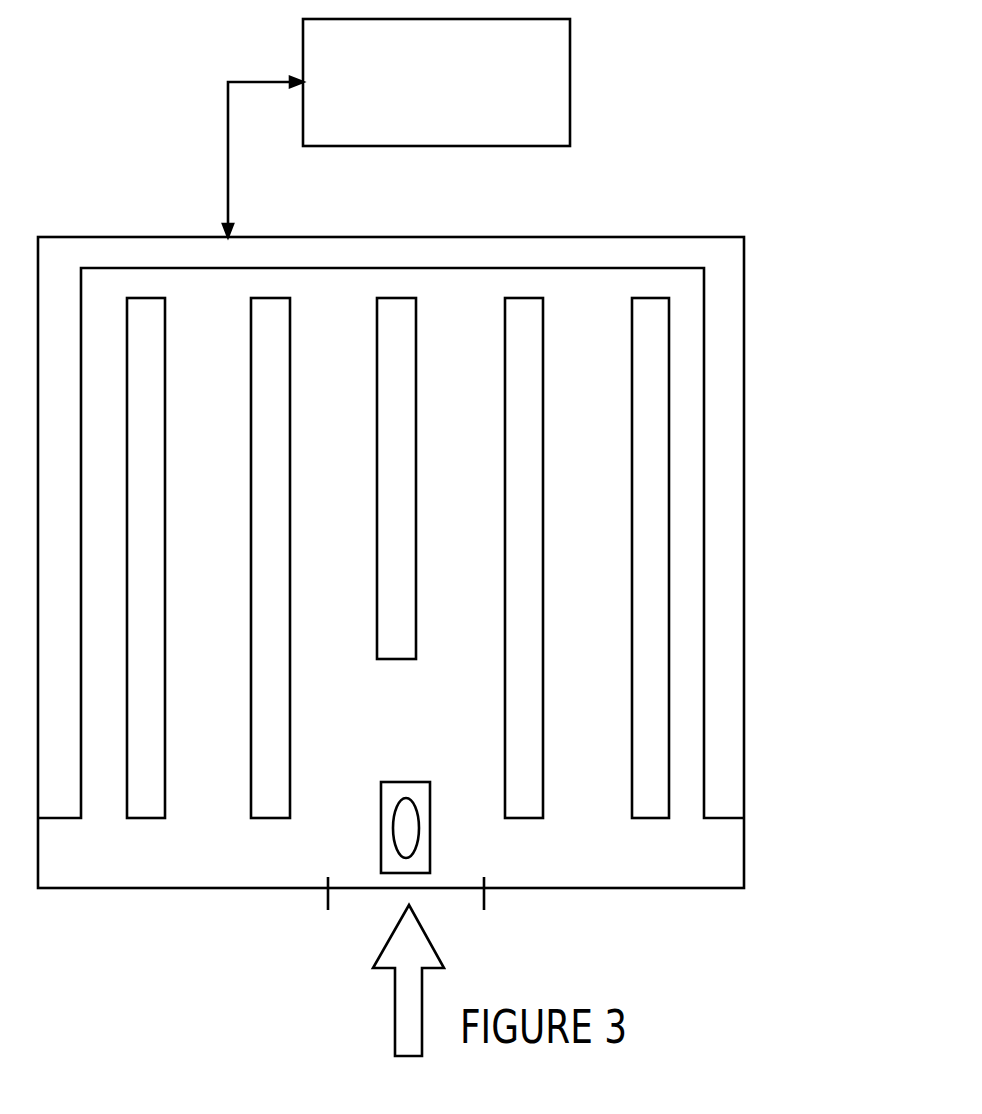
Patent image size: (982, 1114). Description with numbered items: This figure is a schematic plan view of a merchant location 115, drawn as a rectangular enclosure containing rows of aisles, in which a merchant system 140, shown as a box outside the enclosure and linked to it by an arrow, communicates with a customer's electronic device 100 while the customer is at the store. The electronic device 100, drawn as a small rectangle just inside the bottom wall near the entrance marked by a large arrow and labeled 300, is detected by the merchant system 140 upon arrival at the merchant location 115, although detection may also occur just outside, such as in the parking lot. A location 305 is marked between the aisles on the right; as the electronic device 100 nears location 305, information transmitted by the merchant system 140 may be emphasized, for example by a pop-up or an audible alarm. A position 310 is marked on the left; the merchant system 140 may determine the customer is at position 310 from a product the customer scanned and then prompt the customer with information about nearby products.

The merchant location 115 is at (112, 236).
The merchant system 140 is at (570, 88).
The position 310 is at (230, 342).
The location 305 is at (608, 569).
The loading station / processing position 300 is at (424, 735).
The electronic device 100 is at (405, 782).